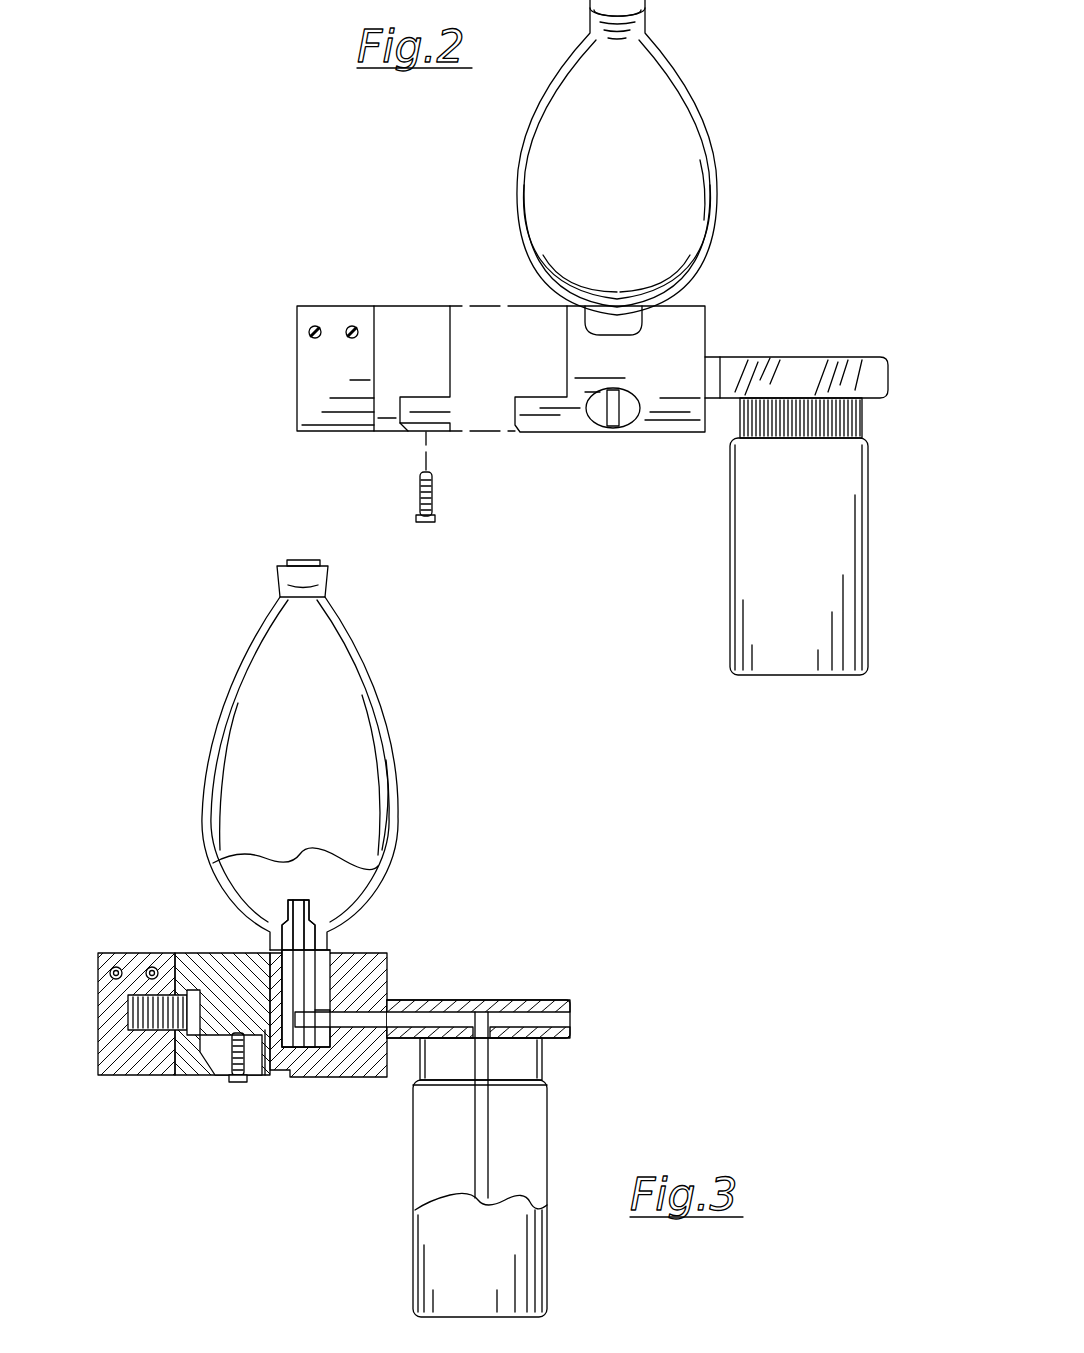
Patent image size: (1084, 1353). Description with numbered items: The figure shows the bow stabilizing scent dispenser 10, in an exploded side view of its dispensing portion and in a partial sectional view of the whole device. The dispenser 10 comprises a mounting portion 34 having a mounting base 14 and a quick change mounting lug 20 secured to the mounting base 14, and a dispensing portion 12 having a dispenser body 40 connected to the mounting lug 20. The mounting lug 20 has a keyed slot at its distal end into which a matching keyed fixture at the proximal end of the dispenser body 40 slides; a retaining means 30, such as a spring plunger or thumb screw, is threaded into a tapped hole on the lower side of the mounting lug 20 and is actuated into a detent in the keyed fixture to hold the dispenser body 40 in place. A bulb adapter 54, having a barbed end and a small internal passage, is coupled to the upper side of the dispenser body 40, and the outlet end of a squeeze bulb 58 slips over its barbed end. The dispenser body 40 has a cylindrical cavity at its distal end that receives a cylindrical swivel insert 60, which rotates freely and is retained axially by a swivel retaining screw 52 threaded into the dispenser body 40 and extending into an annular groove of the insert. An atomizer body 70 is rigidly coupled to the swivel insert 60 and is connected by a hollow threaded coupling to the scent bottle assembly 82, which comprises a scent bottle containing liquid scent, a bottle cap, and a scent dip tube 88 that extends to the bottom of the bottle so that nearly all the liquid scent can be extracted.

In FIG. 3, the bow stabilizing scent dispenser 10 is at (157, 662).
In FIG. 2, the dispensing portion 12 is at (780, 75).
In FIG. 3, the dispensing portion 12 is at (478, 832).
In FIG. 2, the mounting base 14 is at (305, 371).
In FIG. 3, the mounting base 14 is at (120, 955).
In FIG. 2, the quick change mounting lug 20 is at (438, 306).
In FIG. 3, the quick change mounting lug 20 is at (200, 1080).
In FIG. 2, the retaining means 30 is at (420, 510).
In FIG. 3, the retaining means 30 is at (238, 1057).
In FIG. 2, the mounting portion 34 is at (367, 270).
In FIG. 3, the mounting portion 34 is at (157, 1103).
In FIG. 2, the dispenser body 40 is at (705, 310).
In FIG. 3, the dispenser body 40 is at (385, 955).
In FIG. 2, the swivel retaining screw 52 is at (625, 420).
In FIG. 3, the bulb adapter 54 is at (285, 910).
In FIG. 2, the squeeze bulb 58 is at (697, 160).
In FIG. 3, the squeeze bulb 58 is at (386, 762).
In FIG. 3, the swivel insert 60 is at (395, 990).
In FIG. 2, the atomizer body 70 is at (800, 357).
In FIG. 3, the atomizer body 70 is at (503, 1002).
In FIG. 2, the scent bottle assembly 82 is at (692, 567).
In FIG. 3, the scent bottle assembly 82 is at (387, 1188).
In FIG. 3, the scent dip tube 88 is at (480, 1125).